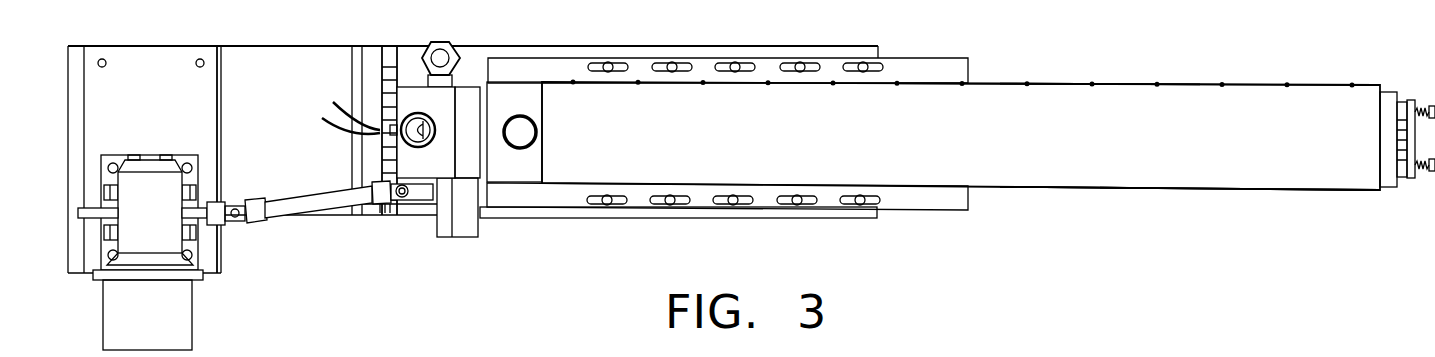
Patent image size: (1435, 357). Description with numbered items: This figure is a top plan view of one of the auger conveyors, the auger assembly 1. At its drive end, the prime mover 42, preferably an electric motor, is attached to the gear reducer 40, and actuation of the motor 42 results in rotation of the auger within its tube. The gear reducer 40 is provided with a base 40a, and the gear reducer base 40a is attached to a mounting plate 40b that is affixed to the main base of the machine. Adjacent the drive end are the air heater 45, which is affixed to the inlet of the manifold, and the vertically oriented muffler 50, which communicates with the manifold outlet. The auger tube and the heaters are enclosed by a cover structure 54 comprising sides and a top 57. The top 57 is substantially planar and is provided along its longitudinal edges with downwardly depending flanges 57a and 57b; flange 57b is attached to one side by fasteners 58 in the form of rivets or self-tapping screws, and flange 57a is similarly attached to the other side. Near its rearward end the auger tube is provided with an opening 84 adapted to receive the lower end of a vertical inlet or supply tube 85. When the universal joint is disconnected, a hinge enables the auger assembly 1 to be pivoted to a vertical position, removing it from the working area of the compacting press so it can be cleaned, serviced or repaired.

The auger assembly 1 is at (997, 194).
The gear reducer 40 is at (163, 227).
The gear reducer base 40a is at (104, 155).
The mounting plate 40b is at (175, 102).
The prime mover 42 is at (162, 329).
The air heater 45 is at (406, 143).
The muffler 50 is at (428, 58).
The cover structure 54 is at (1076, 144).
The top 57 is at (1242, 149).
The flange 57a is at (1050, 83).
The flange 57b is at (1180, 190).
The fasteners 58 is at (1088, 188).
The opening 84 is at (534, 135).
The supply tube 85 is at (534, 120).